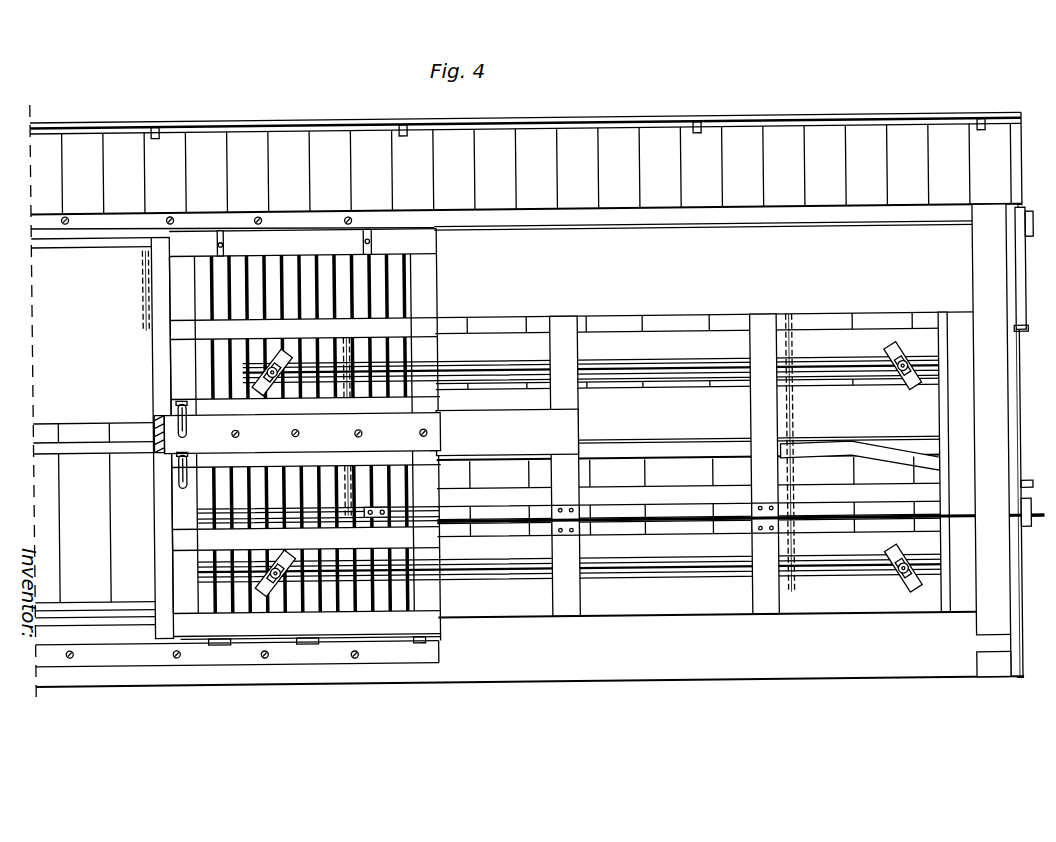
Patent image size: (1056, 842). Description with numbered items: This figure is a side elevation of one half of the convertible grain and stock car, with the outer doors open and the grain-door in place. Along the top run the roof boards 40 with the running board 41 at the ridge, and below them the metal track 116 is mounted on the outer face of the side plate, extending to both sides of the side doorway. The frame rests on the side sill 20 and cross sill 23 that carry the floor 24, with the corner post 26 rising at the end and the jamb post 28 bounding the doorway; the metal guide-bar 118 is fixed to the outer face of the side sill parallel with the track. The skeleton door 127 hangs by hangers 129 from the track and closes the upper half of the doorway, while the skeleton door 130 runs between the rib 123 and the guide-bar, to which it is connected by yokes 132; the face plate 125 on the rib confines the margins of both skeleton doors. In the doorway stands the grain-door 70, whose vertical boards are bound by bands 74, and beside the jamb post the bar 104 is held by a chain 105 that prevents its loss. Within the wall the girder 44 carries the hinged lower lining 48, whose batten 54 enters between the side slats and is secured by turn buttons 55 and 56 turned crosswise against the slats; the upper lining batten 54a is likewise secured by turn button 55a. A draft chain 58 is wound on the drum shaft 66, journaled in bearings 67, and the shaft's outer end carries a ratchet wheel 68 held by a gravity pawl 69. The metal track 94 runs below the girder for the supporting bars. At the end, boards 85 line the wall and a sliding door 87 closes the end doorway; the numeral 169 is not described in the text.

The running board 41 is at (590, 128).
The roof boards 40 is at (526, 168).
The metal track 116 is at (119, 223).
The bar 104 is at (70, 249).
The jamb post 28 is at (150, 374).
The chain 105 is at (141, 299).
The band or batten 74 is at (88, 445).
The grain-door 70 is at (95, 528).
The metal guide-bar 118 is at (237, 654).
The side sill 20 is at (530, 667).
The skeleton door 127 is at (297, 425).
The hanger 129 is at (225, 247).
The cleat or batten 54a is at (625, 378).
The cleat or batten 54 is at (658, 571).
The upper brick course 169 is at (680, 330).
The girder 44 is at (692, 422).
The metal track 94 is at (693, 458).
The lower lining 48 is at (693, 472).
The drum shaft 66 is at (671, 530).
The bearing 67 is at (564, 541).
The floor 24 is at (637, 608).
The rib 123 is at (504, 432).
The face plate 125 is at (297, 443).
The chain 58 is at (353, 477).
The skeleton door 130 is at (305, 540).
The yoke 132 is at (214, 648).
The turn button 55a is at (273, 366).
The turn button 56 is at (260, 598).
The turn button 55 is at (900, 589).
The corner post 26 is at (991, 440).
The cross sill 23 is at (986, 671).
The lining boards 85 is at (1013, 379).
The sliding door 87 is at (1022, 272).
The gravity pawl 69 is at (1016, 496).
The ratchet wheel 68 is at (1016, 519).